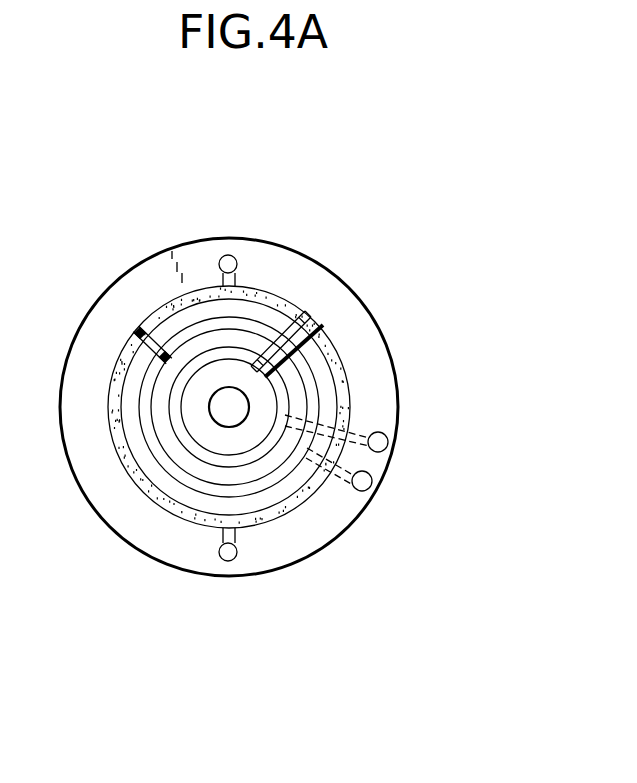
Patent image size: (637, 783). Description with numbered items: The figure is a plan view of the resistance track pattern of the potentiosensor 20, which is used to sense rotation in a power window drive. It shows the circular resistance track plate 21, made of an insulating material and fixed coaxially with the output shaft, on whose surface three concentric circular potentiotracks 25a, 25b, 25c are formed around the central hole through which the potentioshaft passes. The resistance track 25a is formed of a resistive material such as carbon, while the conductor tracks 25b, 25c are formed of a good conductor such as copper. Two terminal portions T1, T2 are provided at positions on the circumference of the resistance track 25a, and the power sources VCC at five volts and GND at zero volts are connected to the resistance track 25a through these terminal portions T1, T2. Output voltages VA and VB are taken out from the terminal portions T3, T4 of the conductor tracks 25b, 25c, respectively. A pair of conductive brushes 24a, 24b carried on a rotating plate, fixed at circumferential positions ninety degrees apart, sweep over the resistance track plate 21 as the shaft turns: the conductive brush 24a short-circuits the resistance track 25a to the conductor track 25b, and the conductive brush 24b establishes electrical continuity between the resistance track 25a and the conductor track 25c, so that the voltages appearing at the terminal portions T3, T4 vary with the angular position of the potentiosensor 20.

The potentiosensor 20 is at (337, 164).
The resistance track plate 21 is at (337, 522).
The conductive brush 24a is at (314, 348).
The conductive brush 24b is at (163, 330).
The resistance track 25a is at (272, 292).
The conductor track 25b is at (185, 448).
The conductor track 25c is at (307, 381).
The terminal portion T1 is at (236, 266).
The terminal portion T2 is at (240, 553).
The terminal portion T3 is at (388, 442).
The terminal portion T4 is at (372, 481).